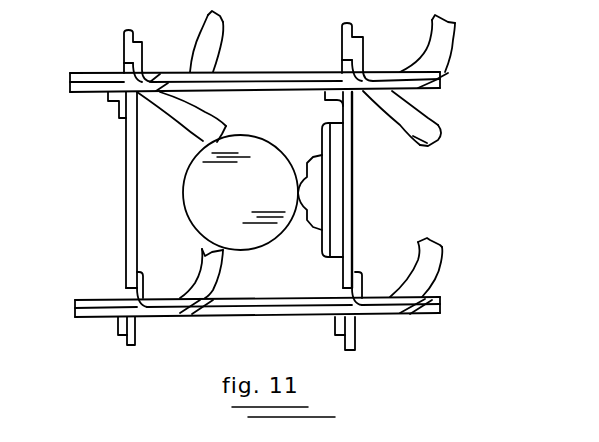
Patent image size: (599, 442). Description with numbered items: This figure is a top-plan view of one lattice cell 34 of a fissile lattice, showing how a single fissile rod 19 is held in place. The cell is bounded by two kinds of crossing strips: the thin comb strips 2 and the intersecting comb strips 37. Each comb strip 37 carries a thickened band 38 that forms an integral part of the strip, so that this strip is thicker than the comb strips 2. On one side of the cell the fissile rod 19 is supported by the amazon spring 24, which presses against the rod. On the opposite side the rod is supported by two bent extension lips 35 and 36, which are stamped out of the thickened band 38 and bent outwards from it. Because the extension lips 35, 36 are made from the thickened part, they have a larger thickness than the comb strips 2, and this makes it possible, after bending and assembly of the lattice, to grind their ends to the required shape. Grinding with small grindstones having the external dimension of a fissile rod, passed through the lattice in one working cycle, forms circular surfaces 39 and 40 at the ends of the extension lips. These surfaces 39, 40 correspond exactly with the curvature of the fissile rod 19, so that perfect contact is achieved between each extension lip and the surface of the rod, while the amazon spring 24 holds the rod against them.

The comb strip 2 is at (122, 40).
The fissile rod 19 is at (250, 200).
The amazon spring 24 is at (330, 188).
The lattice cell 34 is at (304, 135).
The bent extension lip 35 is at (190, 113).
The bent extension lip 36 is at (227, 272).
The comb strip 37 is at (450, 78).
The thickened band 38 is at (90, 72).
The circular surface 39 is at (440, 142).
The circular surface 40 is at (447, 19).